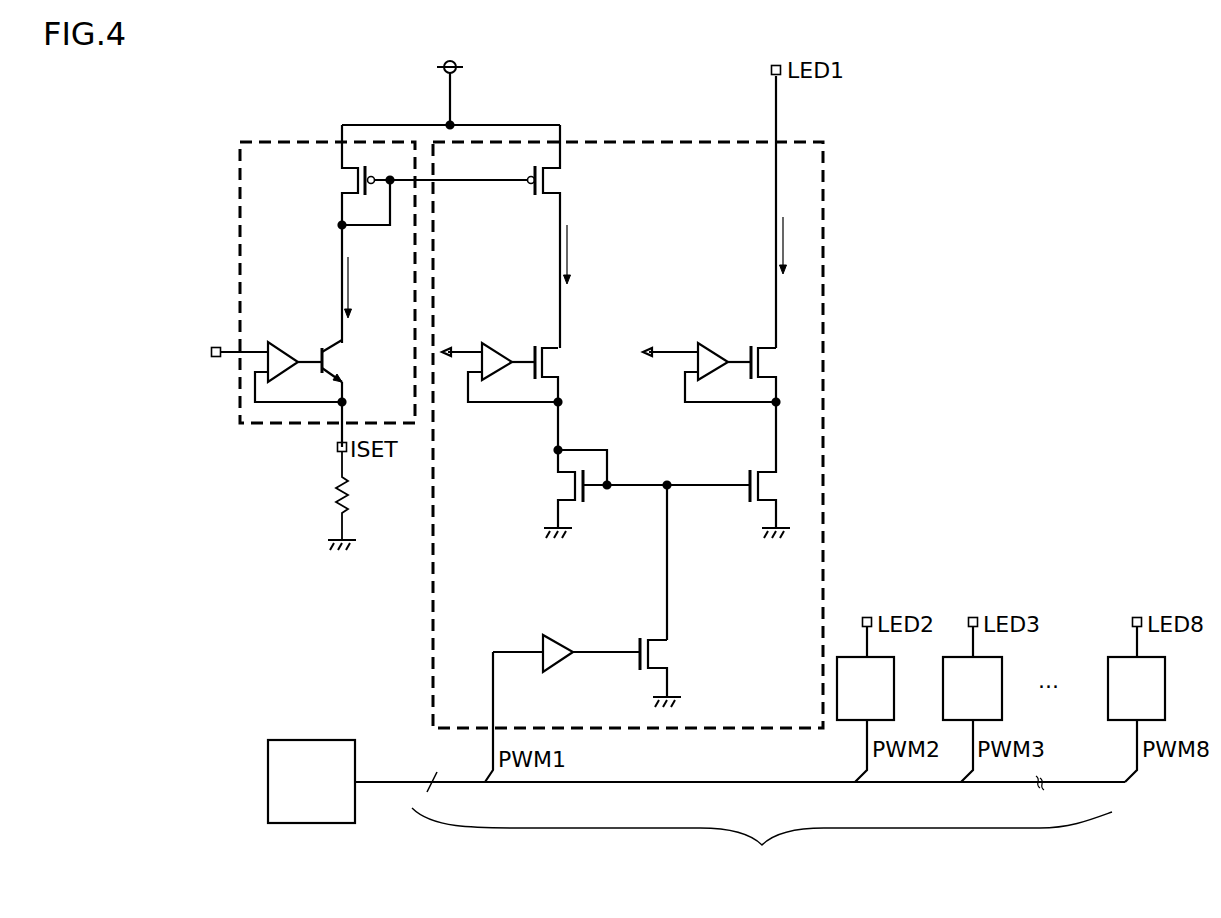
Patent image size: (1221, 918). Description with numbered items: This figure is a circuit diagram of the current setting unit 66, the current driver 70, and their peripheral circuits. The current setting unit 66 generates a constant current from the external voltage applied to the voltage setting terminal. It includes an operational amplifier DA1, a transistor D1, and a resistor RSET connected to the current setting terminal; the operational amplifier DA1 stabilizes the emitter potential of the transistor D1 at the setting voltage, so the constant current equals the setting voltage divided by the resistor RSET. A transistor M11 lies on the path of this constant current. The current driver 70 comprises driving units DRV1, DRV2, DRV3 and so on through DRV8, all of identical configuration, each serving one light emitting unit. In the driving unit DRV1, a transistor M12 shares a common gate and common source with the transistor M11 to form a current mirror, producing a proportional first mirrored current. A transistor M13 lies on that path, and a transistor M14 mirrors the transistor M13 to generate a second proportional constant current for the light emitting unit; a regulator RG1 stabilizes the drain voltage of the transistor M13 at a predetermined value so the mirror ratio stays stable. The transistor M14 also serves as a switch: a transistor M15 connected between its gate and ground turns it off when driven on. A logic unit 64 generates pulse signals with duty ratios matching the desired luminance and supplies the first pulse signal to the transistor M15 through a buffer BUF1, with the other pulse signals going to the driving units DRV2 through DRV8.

The logic unit 64 is at (355, 752).
The current setting unit 66 is at (341, 303).
The current driver 70 is at (740, 824).
The transistor M11 is at (338, 192).
The transistor M12 is at (563, 198).
The transistor M13 is at (553, 485).
The transistor M14 is at (776, 484).
The transistor M15 is at (668, 655).
The operational amplifier DA1 is at (284, 345).
The transistor D1 is at (340, 357).
The regulator RG1 is at (530, 337).
The buffer BUF1 is at (568, 640).
The driving unit DRV1 is at (631, 402).
The driving unit DRV2 is at (868, 700).
The driving unit DRV3 is at (974, 700).
The driving unit DRV8 is at (1139, 700).
The resistor RSET is at (367, 501).